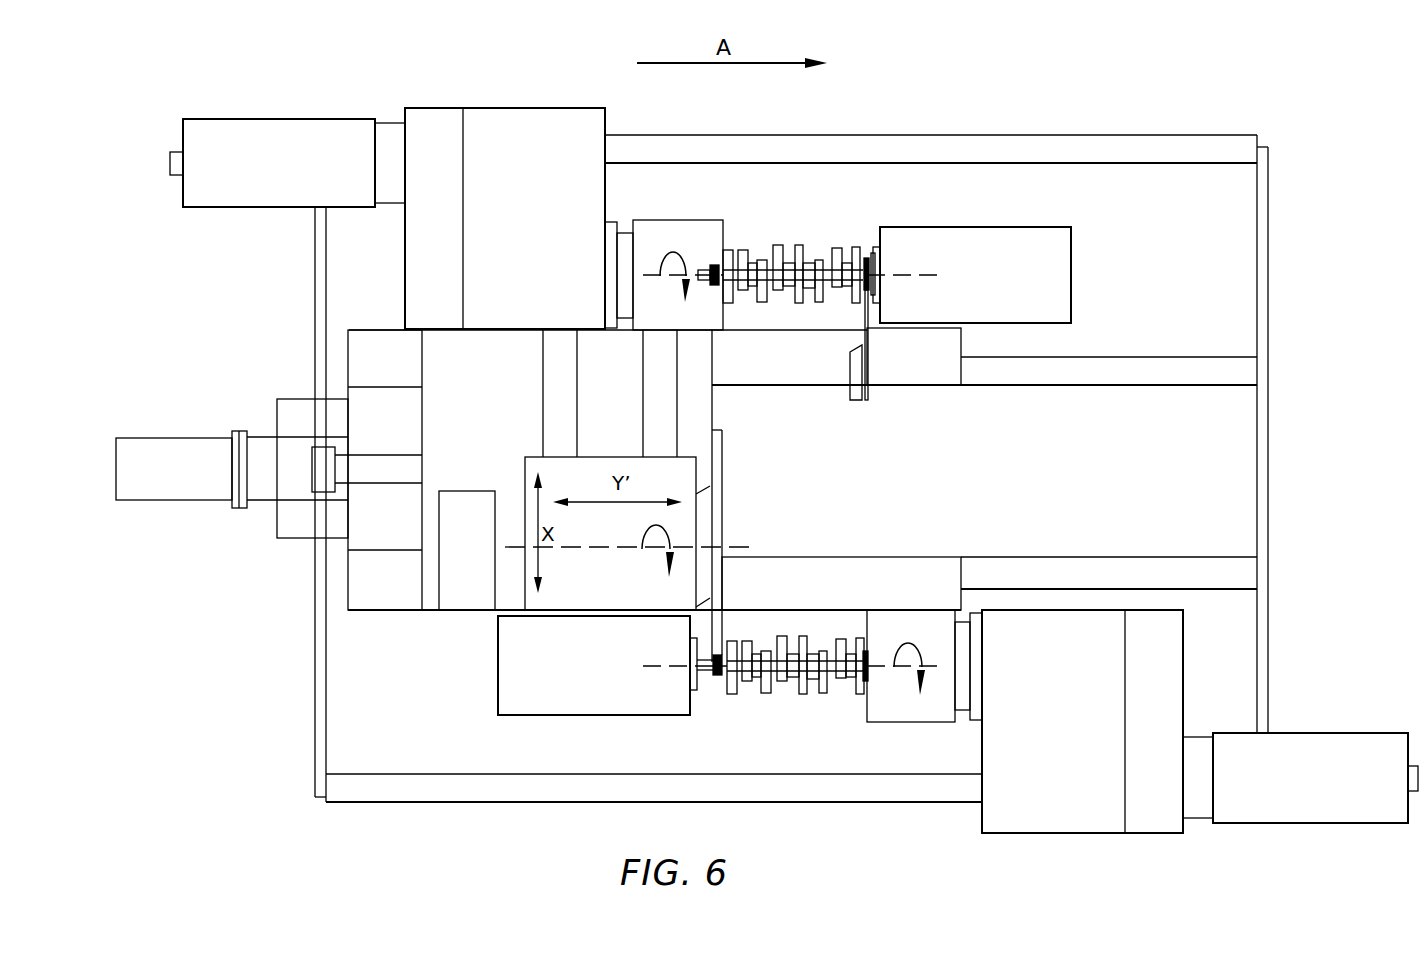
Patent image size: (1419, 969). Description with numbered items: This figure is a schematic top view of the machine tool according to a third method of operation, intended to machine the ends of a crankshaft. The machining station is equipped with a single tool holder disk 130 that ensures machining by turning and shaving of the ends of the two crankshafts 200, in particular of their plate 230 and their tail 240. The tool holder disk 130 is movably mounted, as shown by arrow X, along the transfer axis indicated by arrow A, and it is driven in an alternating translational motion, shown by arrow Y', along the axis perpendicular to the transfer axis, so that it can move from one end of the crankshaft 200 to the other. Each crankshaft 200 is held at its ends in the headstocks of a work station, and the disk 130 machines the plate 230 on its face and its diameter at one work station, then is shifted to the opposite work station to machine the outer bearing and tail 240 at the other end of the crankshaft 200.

The plate 230 is at (716, 264).
The crankshaft 200 is at (801, 252).
The tail 240 is at (867, 258).
The tool holder disk 130 is at (870, 366).